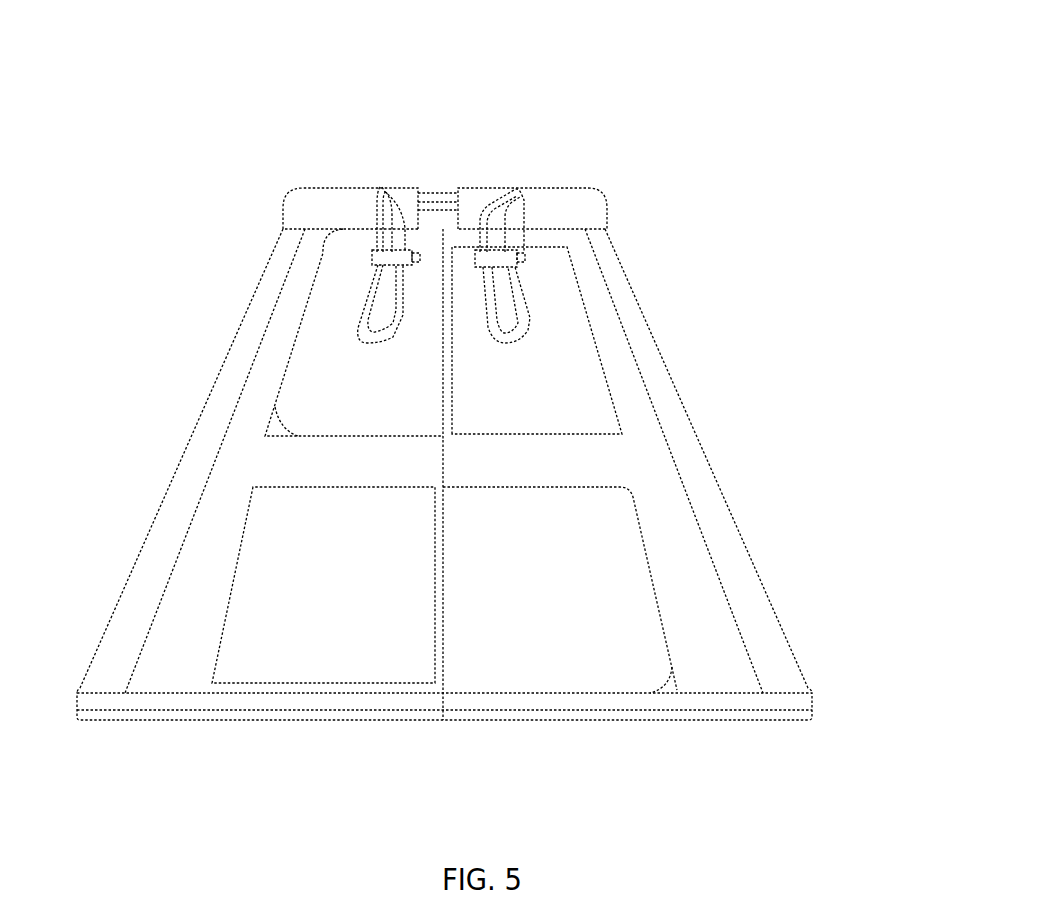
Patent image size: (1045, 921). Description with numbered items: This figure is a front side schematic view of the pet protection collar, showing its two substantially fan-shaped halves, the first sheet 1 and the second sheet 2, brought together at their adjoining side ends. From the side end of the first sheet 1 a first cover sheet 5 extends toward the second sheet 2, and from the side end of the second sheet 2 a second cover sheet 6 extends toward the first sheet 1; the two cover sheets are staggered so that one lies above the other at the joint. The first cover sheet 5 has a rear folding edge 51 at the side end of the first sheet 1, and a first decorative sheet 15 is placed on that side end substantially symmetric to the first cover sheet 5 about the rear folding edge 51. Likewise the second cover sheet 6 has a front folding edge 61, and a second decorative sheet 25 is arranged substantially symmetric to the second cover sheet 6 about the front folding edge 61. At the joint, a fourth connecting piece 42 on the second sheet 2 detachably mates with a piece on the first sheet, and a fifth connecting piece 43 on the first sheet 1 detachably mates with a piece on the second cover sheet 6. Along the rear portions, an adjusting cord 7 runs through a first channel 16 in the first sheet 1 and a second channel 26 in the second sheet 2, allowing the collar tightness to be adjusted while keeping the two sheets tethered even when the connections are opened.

The first sheet 1 is at (638, 433).
The second sheet 2 is at (232, 475).
The first cover sheet 5 is at (338, 297).
The second cover sheet 6 is at (603, 558).
The adjusting cord 7 is at (435, 203).
The first decorative sheet 15 is at (540, 383).
The first channel 16 is at (568, 206).
The second decorative sheet 25 is at (262, 600).
The second channel 26 is at (332, 207).
The fourth connecting piece 42 is at (270, 423).
The fifth connecting piece 43 is at (673, 685).
The rear folding edge 51 is at (442, 392).
The front folding edge 61 is at (447, 538).